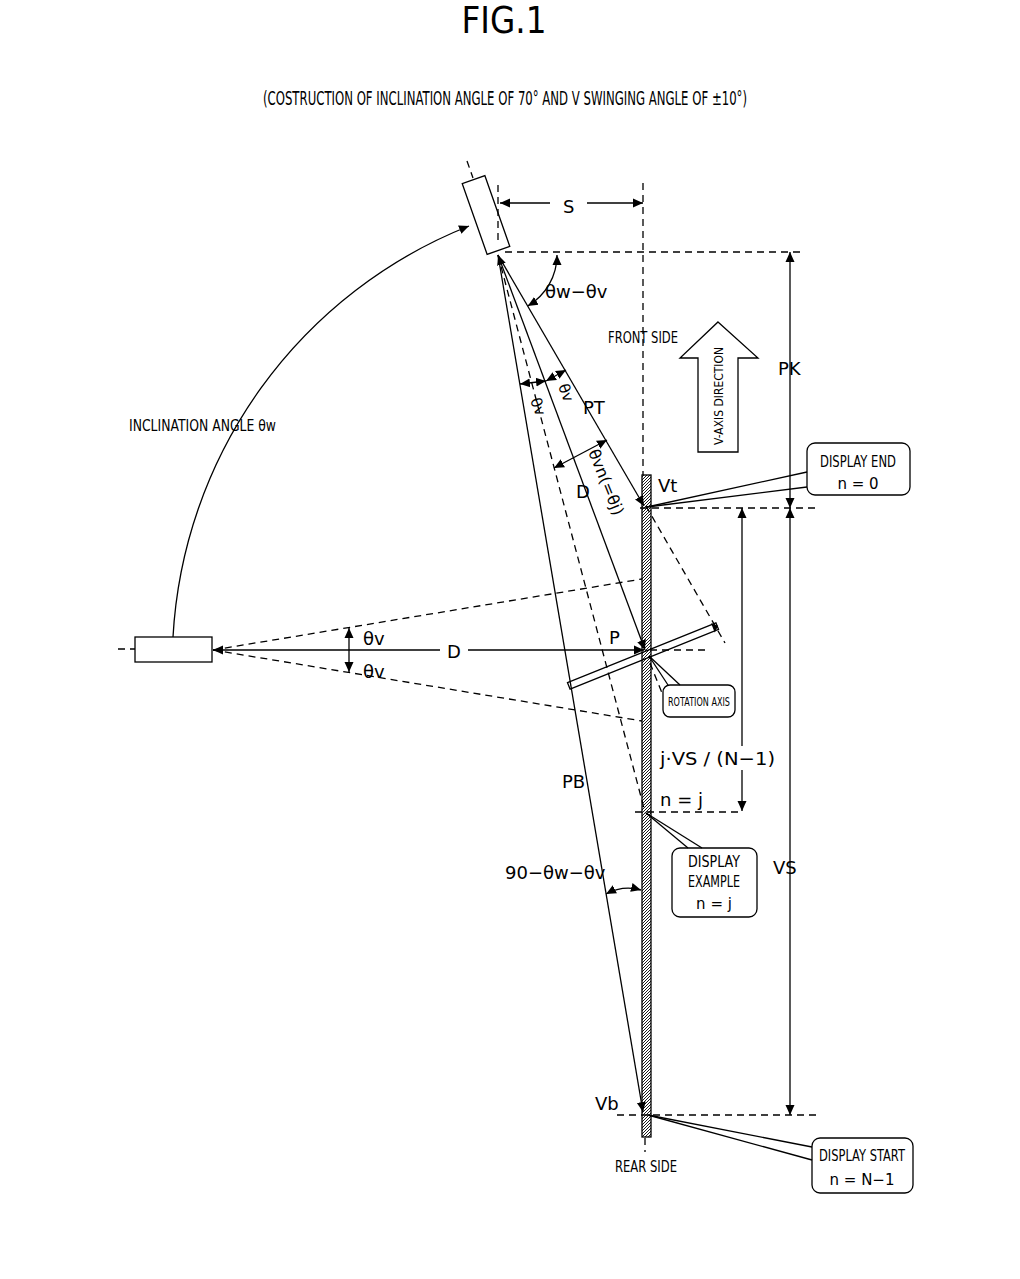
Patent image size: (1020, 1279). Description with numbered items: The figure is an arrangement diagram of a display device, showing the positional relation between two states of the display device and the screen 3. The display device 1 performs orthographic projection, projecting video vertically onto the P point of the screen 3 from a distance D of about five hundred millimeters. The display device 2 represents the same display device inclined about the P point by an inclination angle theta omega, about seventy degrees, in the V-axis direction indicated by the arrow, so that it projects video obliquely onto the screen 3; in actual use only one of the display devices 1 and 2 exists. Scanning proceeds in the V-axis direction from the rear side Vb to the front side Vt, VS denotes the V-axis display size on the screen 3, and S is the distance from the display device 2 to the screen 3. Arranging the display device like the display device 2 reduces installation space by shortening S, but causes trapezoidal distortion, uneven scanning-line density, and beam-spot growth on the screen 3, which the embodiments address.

The display device 1 is at (150, 660).
The display device 2 is at (474, 228).
The screen 3 is at (692, 806).